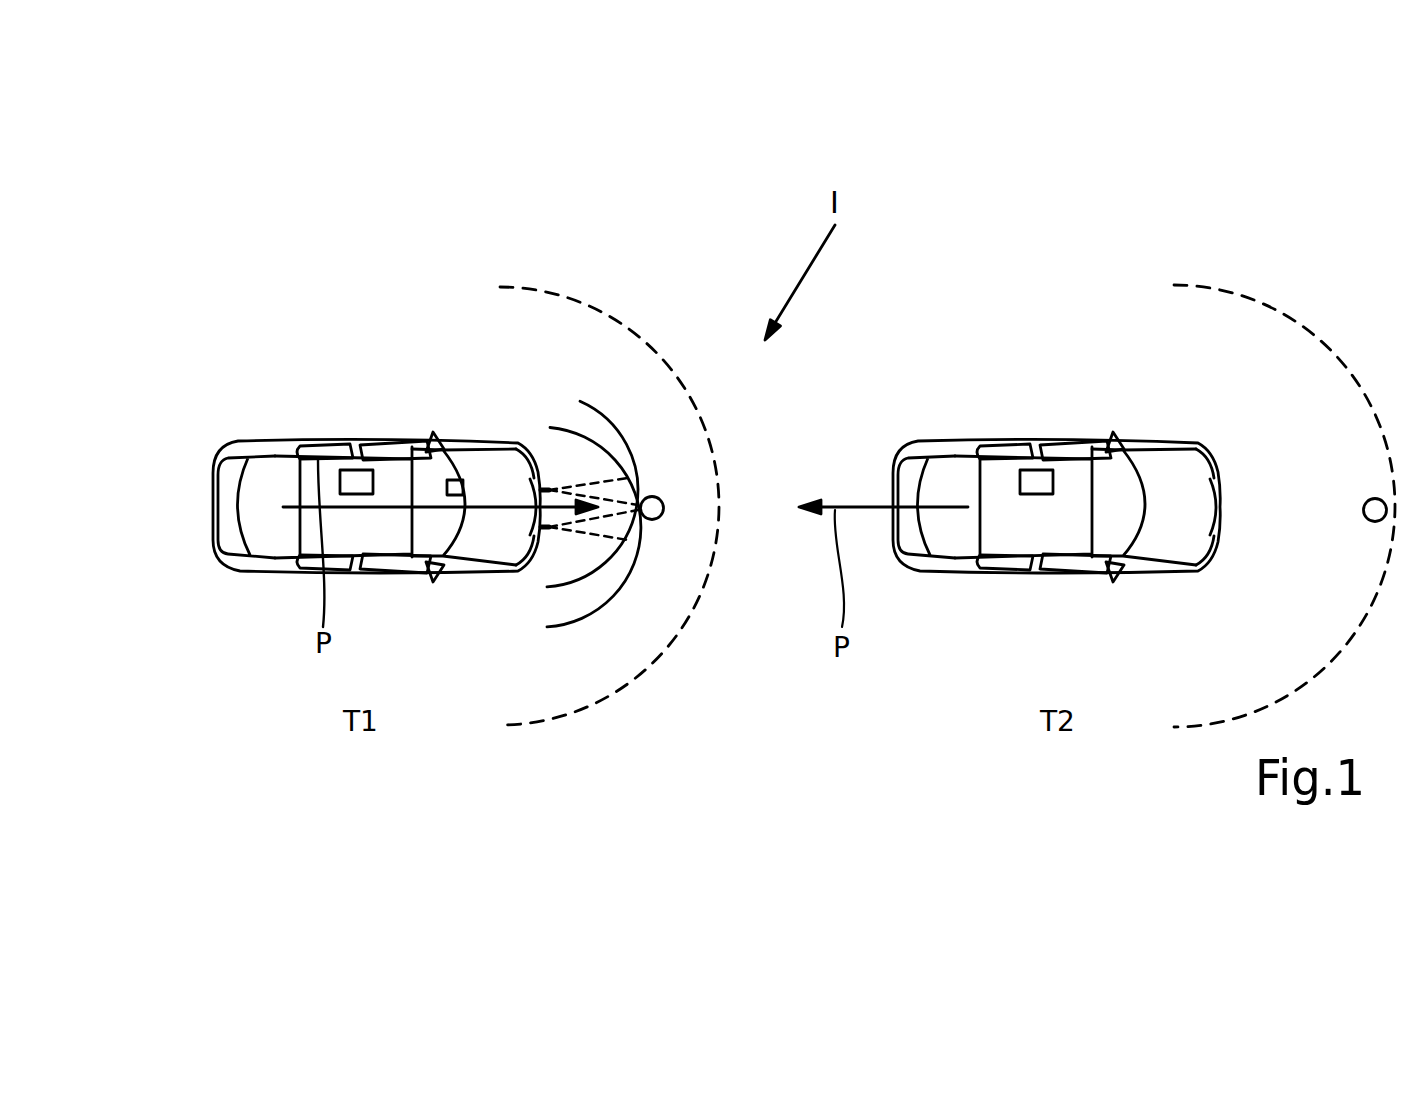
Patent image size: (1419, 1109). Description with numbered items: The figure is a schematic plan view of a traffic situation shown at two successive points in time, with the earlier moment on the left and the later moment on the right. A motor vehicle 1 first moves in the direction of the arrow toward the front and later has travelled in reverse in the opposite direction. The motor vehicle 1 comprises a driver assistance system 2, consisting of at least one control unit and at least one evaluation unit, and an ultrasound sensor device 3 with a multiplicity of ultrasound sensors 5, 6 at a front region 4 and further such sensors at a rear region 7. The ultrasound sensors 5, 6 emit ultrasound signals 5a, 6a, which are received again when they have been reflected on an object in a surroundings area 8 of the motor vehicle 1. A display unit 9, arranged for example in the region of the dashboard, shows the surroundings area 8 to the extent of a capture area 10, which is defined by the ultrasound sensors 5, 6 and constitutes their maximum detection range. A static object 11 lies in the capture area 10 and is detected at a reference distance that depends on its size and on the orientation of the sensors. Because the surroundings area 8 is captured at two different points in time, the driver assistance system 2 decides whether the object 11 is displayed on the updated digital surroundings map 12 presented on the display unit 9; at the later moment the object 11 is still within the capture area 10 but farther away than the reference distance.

The motor vehicle 1 is at (314, 422).
The driver assistance system 2 is at (354, 482).
The ultrasound sensor device 3 is at (206, 447).
The front region 4 is at (537, 562).
The ultrasound sensor 5 is at (545, 490).
The ultrasound signal 5a is at (620, 430).
The ultrasound sensor 6 is at (545, 527).
The ultrasound signal 6a is at (627, 578).
The rear region 7 is at (220, 520).
The surroundings area 8 is at (666, 437).
The display unit 9 is at (456, 480).
The capture area 10 is at (585, 300).
The object 11 is at (661, 517).
The digital surroundings map 12 is at (428, 440).